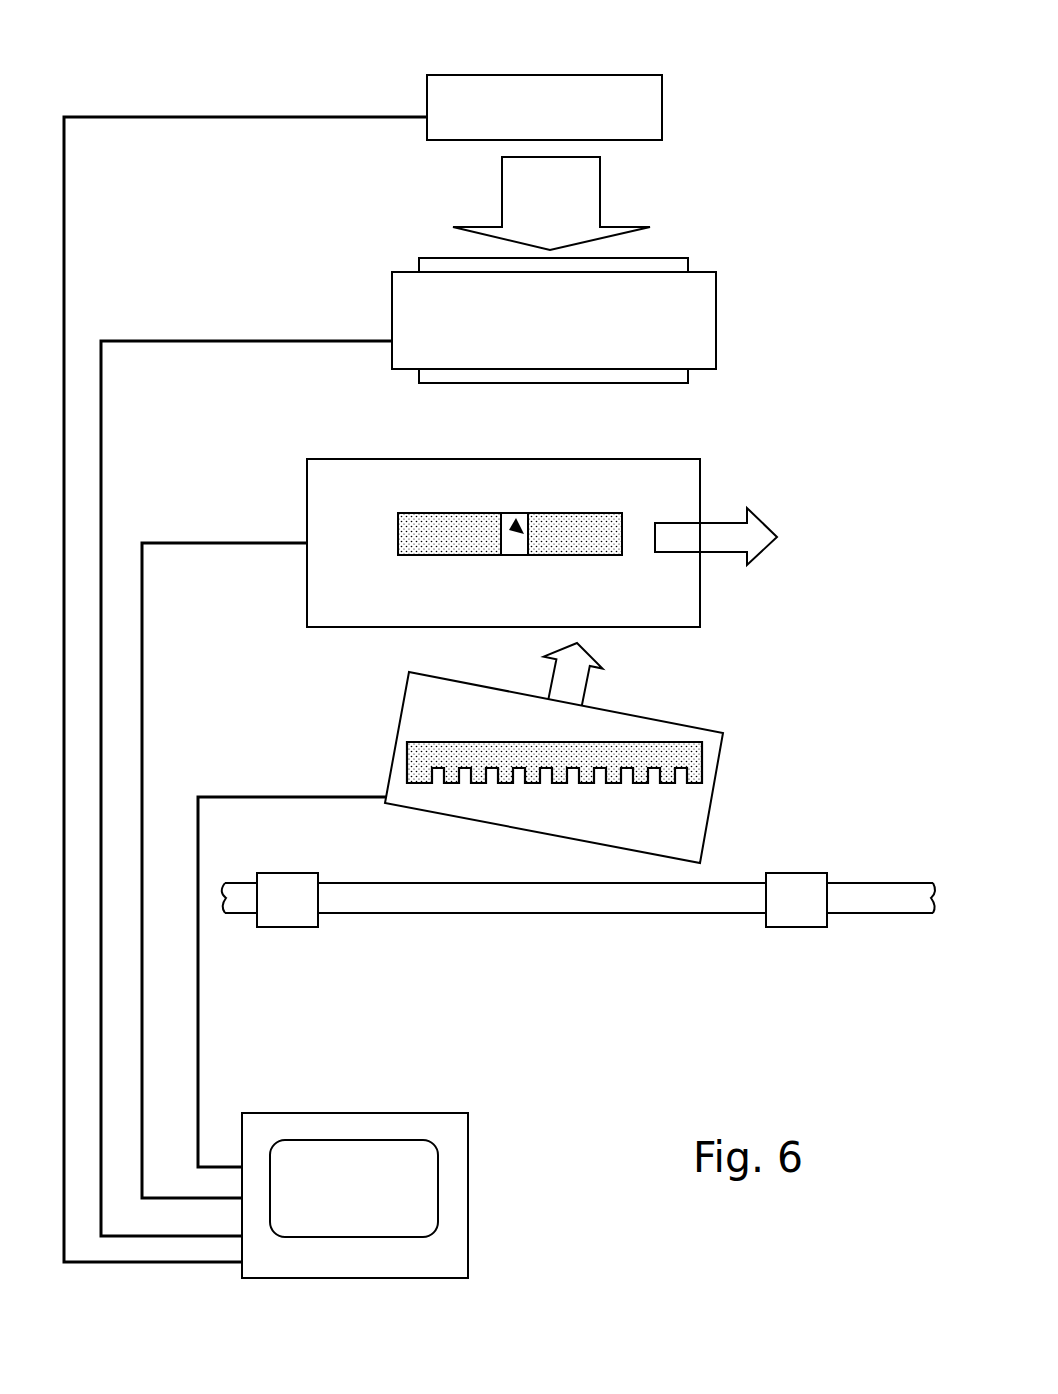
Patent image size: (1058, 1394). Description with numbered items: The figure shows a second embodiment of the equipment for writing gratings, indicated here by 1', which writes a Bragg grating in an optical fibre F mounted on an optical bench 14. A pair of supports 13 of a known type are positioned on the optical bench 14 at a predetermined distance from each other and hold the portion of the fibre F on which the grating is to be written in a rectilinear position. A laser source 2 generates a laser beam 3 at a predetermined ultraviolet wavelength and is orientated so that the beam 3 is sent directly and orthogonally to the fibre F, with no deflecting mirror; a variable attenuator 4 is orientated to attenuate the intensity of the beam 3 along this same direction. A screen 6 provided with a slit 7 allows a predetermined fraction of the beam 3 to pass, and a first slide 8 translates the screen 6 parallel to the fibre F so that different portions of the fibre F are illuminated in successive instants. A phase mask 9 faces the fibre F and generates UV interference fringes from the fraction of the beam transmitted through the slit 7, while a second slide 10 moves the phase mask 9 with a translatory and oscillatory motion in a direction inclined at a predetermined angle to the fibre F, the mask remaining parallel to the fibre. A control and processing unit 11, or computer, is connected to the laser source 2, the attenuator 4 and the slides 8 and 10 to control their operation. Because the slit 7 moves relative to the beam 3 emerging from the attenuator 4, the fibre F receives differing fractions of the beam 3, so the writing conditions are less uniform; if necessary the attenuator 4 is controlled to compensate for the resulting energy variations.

The equipment for writing gratings 1' is at (834, 114).
The laser source 2 is at (450, 95).
The laser beam 3 is at (520, 180).
The variable attenuator 4 is at (678, 322).
The screen 6 is at (605, 525).
The slit 7 is at (518, 530).
The first slide 8 is at (330, 470).
The phase mask 9 is at (685, 748).
The second slide 10 is at (423, 717).
The control and processing unit 11 is at (458, 1195).
The supports 13 is at (299, 917).
The optical bench 14 is at (877, 434).
The optical fibre F is at (556, 903).